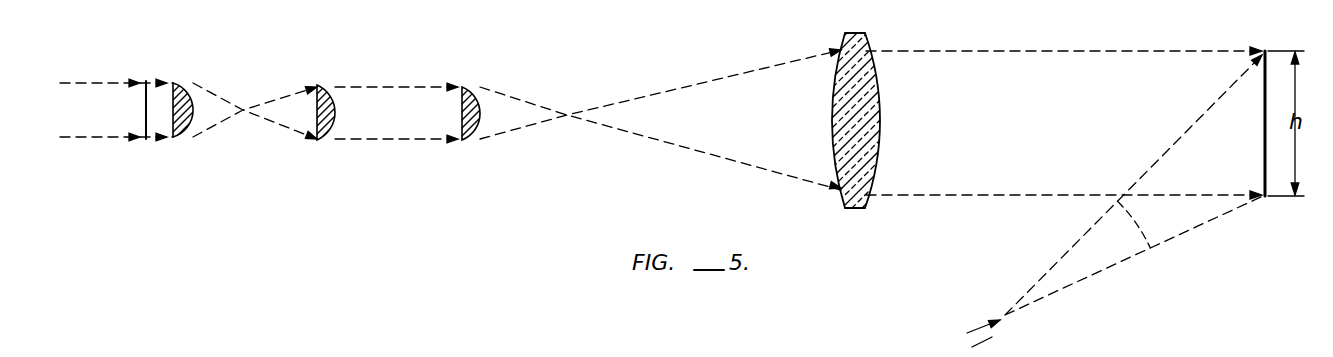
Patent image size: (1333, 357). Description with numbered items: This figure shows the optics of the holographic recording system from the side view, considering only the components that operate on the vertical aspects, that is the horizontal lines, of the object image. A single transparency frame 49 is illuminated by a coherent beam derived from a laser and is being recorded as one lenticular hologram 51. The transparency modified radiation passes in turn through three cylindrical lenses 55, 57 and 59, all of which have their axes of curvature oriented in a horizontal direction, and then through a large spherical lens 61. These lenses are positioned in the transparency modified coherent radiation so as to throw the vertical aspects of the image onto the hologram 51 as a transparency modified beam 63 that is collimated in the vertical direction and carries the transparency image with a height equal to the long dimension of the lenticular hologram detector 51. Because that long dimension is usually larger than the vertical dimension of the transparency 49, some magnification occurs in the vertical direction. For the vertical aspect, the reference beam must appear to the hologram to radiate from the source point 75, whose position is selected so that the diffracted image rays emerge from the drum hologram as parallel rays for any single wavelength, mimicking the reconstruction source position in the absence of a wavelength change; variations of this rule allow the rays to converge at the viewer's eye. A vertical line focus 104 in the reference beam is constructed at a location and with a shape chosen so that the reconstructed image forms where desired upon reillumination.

The transparency frame 49 is at (146, 108).
The cylindrical lens 55 is at (178, 89).
The cylindrical lens 57 is at (330, 92).
The cylindrical lens 59 is at (473, 92).
The large spherical lens 61 is at (866, 37).
The transparency modified beam 63 is at (1037, 64).
The lenticular hologram 51 is at (1267, 52).
The source point 75 is at (1006, 318).
The vertical line focus 104 is at (1160, 246).